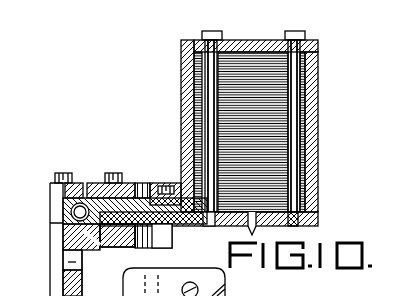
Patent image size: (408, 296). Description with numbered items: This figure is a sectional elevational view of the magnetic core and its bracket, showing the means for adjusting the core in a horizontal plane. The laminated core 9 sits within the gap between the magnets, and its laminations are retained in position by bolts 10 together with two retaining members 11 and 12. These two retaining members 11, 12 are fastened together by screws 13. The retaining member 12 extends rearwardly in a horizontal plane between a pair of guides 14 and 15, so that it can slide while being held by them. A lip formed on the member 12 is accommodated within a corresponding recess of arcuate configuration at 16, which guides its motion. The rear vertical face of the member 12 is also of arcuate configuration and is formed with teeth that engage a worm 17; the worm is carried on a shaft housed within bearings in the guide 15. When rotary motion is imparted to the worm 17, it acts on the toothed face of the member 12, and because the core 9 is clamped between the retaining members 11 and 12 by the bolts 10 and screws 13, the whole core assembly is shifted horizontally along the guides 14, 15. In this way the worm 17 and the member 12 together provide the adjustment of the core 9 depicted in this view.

The laminated core 9 is at (307, 182).
The bolts 10 is at (288, 33).
The retaining member 11 is at (181, 50).
The retaining member 12 is at (318, 219).
The screws 13 is at (165, 183).
The guide 14 is at (78, 183).
The guide 15 is at (112, 246).
The recess of arcuate configuration 16 is at (95, 228).
The worm 17 is at (76, 208).